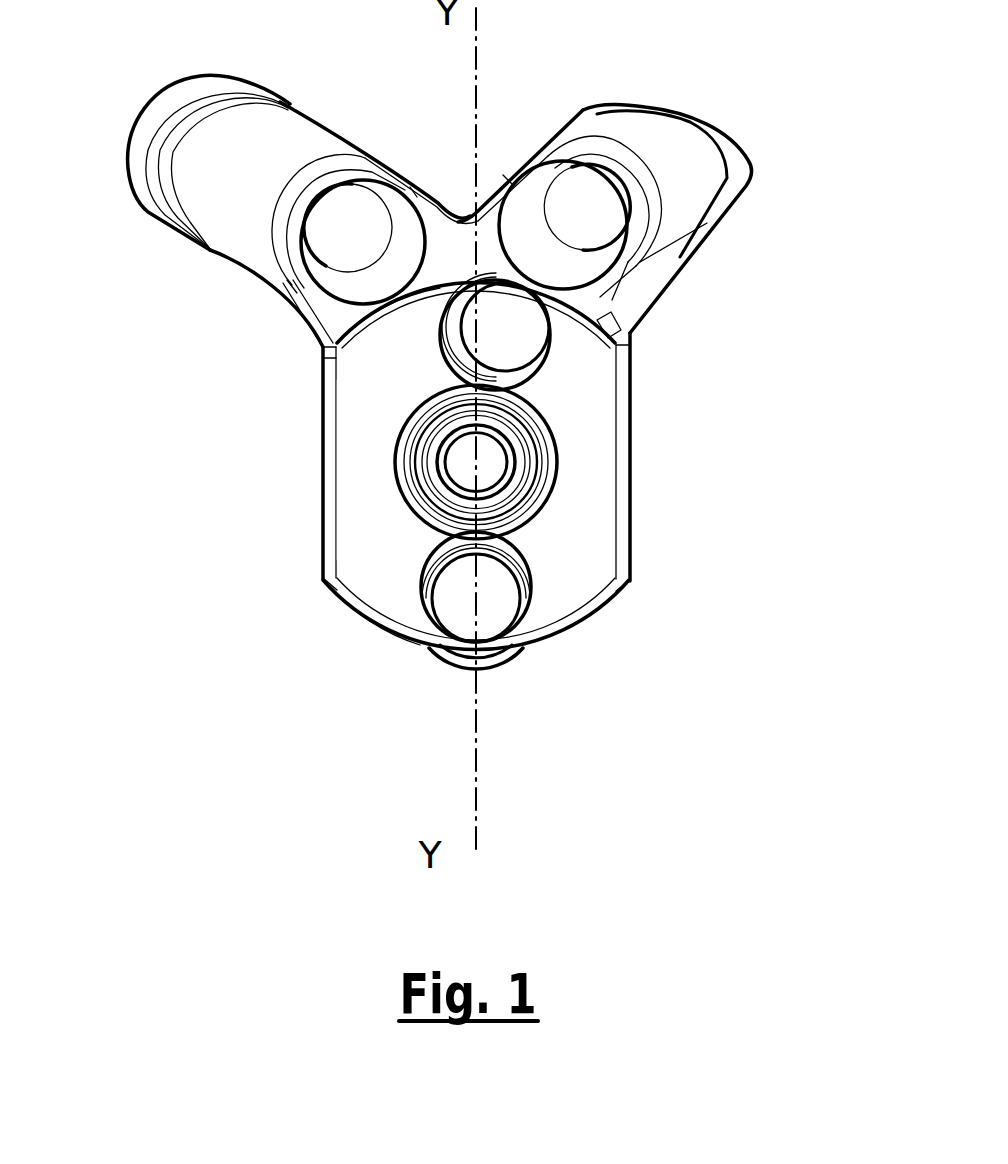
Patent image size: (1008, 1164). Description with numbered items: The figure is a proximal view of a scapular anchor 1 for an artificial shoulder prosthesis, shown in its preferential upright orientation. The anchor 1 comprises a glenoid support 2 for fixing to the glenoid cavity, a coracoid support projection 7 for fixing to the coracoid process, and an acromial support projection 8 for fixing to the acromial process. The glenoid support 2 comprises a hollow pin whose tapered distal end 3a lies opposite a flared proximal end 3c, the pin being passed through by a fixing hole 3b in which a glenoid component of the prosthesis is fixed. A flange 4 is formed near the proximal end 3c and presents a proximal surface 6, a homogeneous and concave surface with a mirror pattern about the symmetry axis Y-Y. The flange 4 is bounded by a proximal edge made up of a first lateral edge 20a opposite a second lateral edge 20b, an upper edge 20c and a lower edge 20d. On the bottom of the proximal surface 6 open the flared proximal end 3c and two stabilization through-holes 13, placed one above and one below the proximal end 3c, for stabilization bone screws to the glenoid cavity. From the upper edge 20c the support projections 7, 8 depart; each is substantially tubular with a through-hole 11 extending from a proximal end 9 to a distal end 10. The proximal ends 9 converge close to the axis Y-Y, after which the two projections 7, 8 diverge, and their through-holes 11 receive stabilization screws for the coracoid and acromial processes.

The anchor 1 is at (205, 827).
The glenoid support 2 is at (250, 622).
The tapered distal end 3a is at (478, 667).
The fixing hole 3b is at (497, 458).
The flared proximal end 3c is at (530, 428).
The flange 4 is at (312, 414).
The proximal surface 6 is at (338, 480).
The coracoid support projection 7 is at (724, 230).
The acromial support projection 8 is at (154, 250).
The proximal end 9 is at (323, 306).
The distal end 10 is at (140, 111).
The through-hole 11 is at (395, 258).
The stabilization through-holes 13 is at (512, 335).
The first lateral edge 20a is at (332, 545).
The second lateral edge 20b is at (618, 553).
The upper edge 20c is at (374, 325).
The lower edge 20d is at (383, 623).